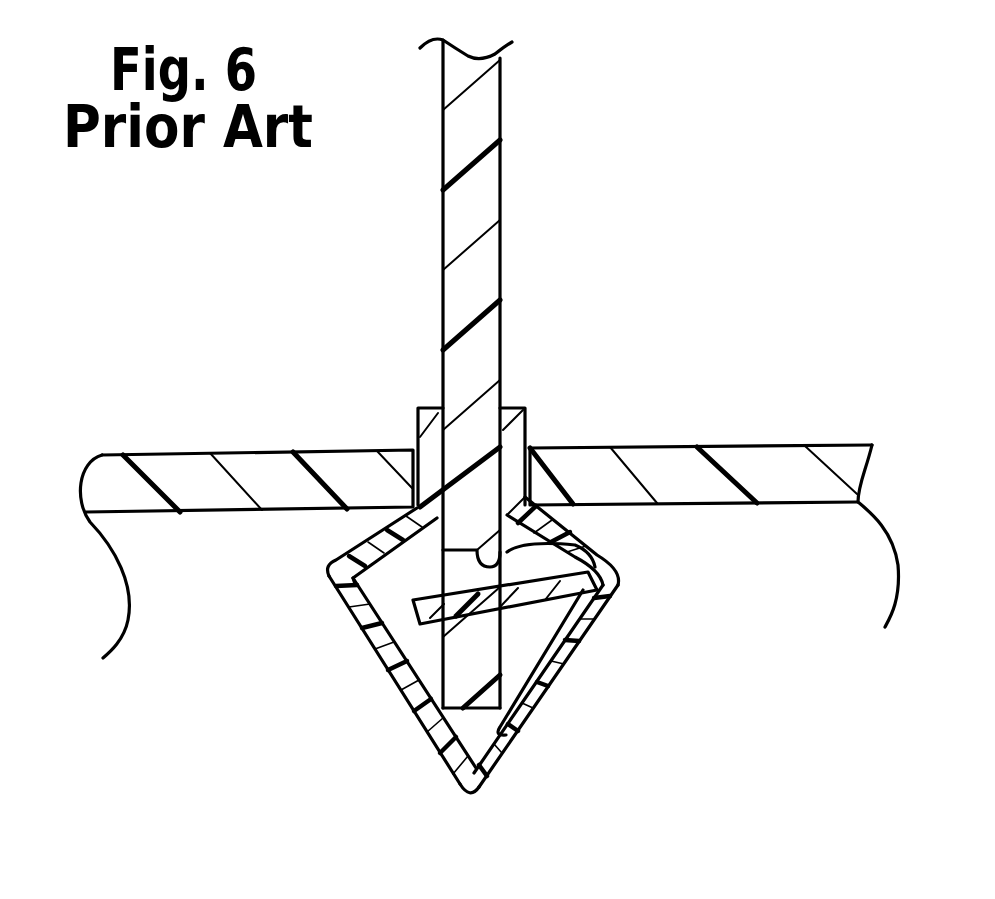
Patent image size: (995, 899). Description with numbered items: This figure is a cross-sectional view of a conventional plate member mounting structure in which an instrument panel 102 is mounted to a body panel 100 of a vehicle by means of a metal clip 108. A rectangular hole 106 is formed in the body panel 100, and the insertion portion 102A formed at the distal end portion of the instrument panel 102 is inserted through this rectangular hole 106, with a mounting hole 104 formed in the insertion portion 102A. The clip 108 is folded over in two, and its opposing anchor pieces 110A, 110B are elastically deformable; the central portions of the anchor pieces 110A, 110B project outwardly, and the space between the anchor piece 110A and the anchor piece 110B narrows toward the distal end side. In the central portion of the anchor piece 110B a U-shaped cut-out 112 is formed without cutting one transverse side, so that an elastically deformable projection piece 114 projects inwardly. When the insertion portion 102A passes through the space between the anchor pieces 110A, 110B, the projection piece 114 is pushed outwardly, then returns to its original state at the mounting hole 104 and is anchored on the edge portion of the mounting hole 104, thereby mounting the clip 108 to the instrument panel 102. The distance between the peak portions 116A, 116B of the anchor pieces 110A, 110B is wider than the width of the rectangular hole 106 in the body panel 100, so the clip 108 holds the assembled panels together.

The body panel 100 is at (740, 462).
The instrument panel 102 is at (520, 271).
The insertion portion 102A is at (487, 660).
The mounting hole 104 is at (565, 550).
The rectangular hole 106 is at (512, 483).
The clip 108 is at (416, 755).
The anchor piece 110A is at (380, 644).
The anchor piece 110B is at (557, 658).
The U-shaped cut-out 112 is at (522, 722).
The projection piece 114 is at (548, 593).
The peak portion 116A is at (328, 565).
The peak portion 116B is at (613, 567).